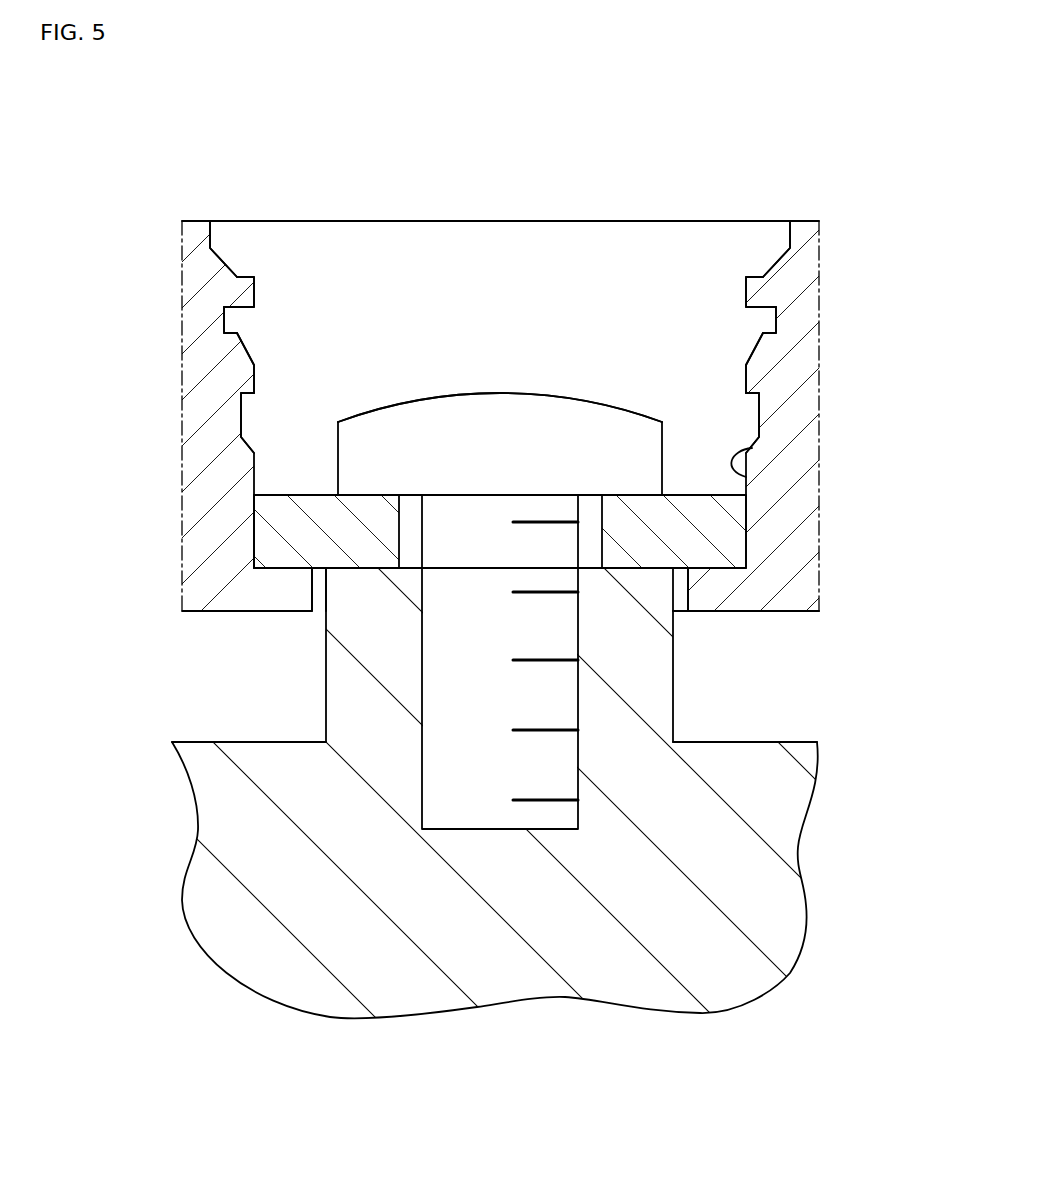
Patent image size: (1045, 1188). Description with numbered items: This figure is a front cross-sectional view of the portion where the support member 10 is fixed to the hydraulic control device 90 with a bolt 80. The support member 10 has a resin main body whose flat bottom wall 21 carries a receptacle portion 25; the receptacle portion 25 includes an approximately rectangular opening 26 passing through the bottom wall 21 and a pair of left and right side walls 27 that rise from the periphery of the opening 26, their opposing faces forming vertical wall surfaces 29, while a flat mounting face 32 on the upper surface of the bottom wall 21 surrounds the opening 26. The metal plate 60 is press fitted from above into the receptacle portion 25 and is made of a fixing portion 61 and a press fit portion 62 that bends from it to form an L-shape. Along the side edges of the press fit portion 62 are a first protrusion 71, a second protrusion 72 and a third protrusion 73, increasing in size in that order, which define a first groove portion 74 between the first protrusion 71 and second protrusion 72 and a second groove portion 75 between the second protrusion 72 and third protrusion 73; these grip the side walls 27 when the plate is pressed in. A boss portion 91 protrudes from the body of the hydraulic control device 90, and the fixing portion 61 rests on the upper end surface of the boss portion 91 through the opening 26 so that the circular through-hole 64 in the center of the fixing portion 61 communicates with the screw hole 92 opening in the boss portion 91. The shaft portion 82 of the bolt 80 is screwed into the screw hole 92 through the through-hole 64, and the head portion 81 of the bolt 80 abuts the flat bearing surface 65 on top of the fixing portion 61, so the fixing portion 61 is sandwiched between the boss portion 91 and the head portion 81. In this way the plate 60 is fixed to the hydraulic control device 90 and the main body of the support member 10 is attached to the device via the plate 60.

The support member 10 is at (493, 112).
The bottom wall 21 is at (728, 613).
The receptacle portion 25 is at (803, 221).
The opening 26 is at (313, 591).
The side walls 27 is at (193, 503).
The wall surfaces 29 is at (752, 448).
The mounting face 32 is at (268, 565).
The plate 60 is at (536, 221).
The fixing portion 61 is at (737, 530).
The press fit portion 62 is at (438, 248).
The through-hole 64 is at (600, 535).
The bearing surface 65 is at (367, 495).
The first protrusion 71 is at (260, 431).
The second protrusion 72 is at (238, 331).
The third protrusion 73 is at (225, 245).
The first groove portion 74 is at (253, 382).
The second groove portion 75 is at (253, 292).
The bolt 80 is at (610, 403).
The head portion 81 is at (423, 410).
The shaft portion 82 is at (437, 715).
The hydraulic control device 90 is at (795, 742).
The boss portion 91 is at (330, 658).
The screw hole 92 is at (567, 716).